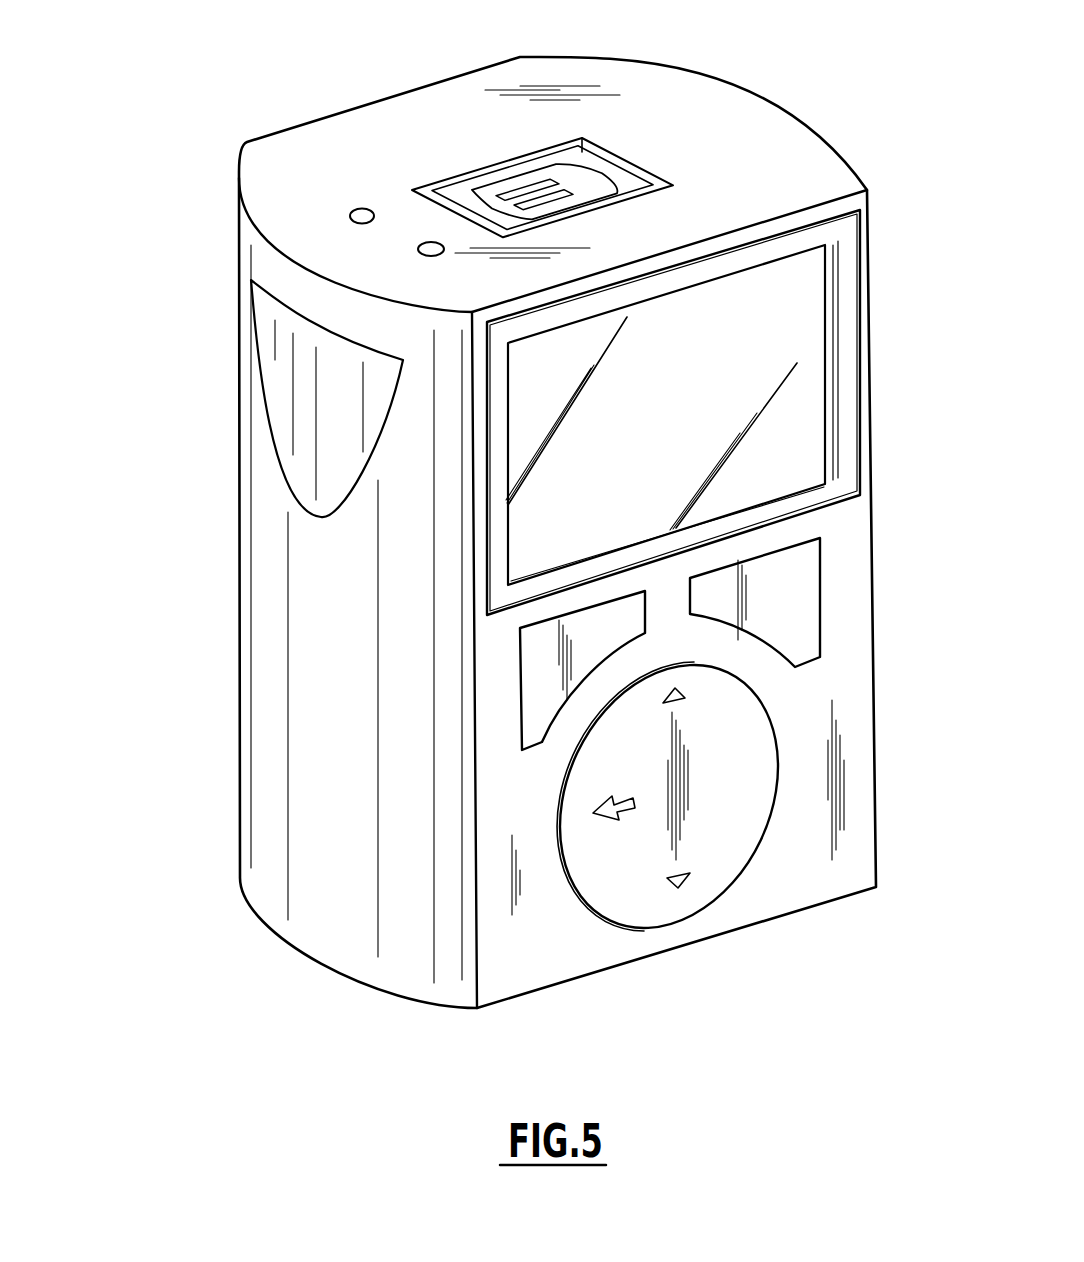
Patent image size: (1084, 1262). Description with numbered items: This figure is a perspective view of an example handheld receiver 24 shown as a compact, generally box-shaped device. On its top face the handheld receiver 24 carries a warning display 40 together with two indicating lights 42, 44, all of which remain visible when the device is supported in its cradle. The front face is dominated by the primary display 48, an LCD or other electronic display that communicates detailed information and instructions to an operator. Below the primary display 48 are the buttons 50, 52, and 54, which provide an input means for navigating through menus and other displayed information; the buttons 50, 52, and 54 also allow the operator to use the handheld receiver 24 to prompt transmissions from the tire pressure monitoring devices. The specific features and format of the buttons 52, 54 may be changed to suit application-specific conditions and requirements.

The handheld receiver 24 is at (166, 896).
The warning display 40 is at (632, 152).
The indicating light 42 is at (355, 208).
The indicating light 44 is at (428, 256).
The primary display 48 is at (790, 417).
The button 50 is at (537, 688).
The button 52 is at (802, 603).
The button 54 is at (715, 862).